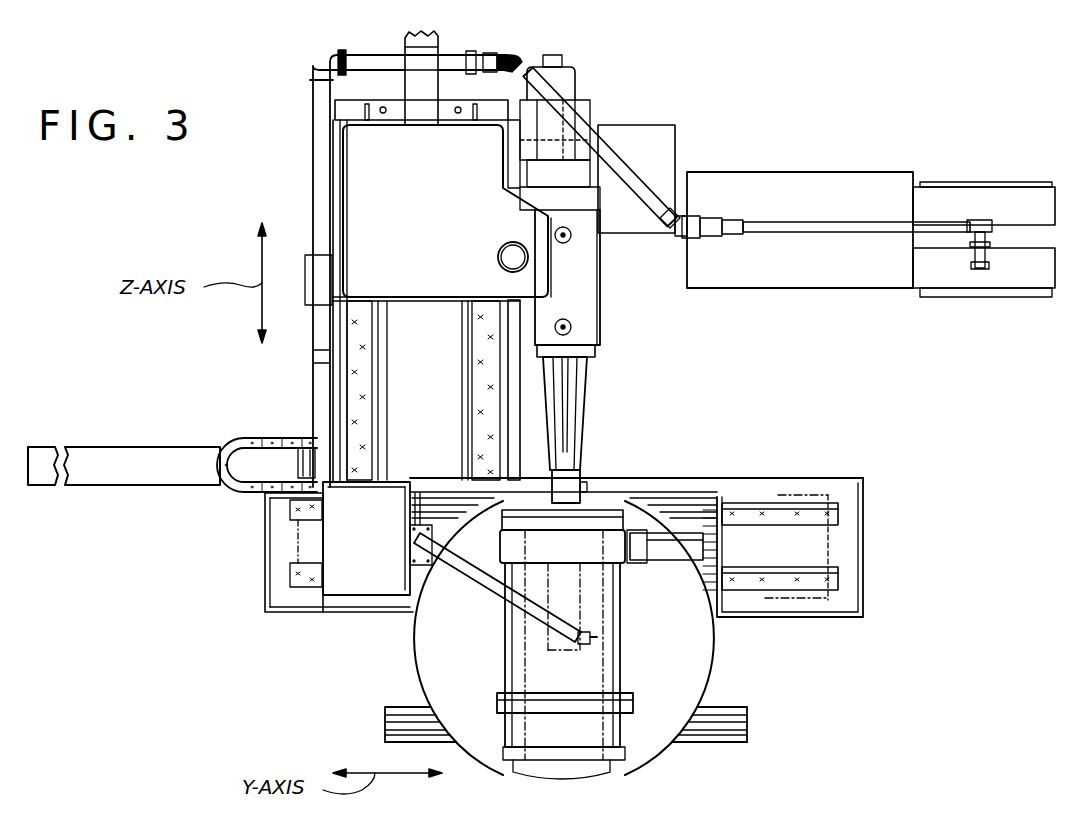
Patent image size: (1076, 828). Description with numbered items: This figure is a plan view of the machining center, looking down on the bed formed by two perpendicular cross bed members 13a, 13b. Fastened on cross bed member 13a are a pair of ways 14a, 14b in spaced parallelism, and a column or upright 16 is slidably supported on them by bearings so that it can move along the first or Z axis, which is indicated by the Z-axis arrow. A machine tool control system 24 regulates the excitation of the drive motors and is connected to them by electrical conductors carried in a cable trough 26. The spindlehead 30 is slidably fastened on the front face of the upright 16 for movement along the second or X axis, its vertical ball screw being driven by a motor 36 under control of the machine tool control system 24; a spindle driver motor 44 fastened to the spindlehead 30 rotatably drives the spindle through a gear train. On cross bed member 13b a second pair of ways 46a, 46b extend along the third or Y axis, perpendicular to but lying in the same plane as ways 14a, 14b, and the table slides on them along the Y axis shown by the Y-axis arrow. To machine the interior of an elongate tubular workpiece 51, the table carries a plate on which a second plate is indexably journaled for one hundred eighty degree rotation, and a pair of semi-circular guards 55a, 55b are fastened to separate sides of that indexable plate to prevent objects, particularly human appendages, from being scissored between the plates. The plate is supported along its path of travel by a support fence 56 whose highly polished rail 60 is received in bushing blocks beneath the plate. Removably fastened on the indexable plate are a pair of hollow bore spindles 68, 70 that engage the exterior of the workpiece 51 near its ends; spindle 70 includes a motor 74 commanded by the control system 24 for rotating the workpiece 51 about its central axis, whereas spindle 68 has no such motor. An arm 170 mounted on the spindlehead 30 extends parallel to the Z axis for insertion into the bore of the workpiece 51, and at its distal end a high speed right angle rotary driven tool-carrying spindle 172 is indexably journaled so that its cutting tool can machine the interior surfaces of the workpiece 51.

The cross bed member 13a is at (517, 427).
The cross bed member 13b is at (863, 548).
The way 14a is at (482, 393).
The way 14b is at (360, 370).
The column or upright 16 is at (410, 290).
The machine tool control system 24 is at (862, 275).
The cable trough 26 is at (850, 220).
The spindlehead 30 is at (588, 310).
The motor 36 is at (500, 256).
The spindle driver motor 44 is at (565, 77).
The way 46a is at (838, 585).
The way 46b is at (838, 515).
The tubular workpiece 51 is at (613, 647).
The semi-circular guard 55a is at (705, 660).
The semi-circular guard 55b is at (422, 667).
The support fence 56 is at (717, 747).
The rail 60 is at (743, 723).
The hollow bore spindle 68 is at (633, 705).
The hollow bore spindle 70 is at (513, 545).
The motor 74 is at (670, 548).
The arm 170 is at (583, 405).
The tool-carrying spindle 172 is at (583, 473).